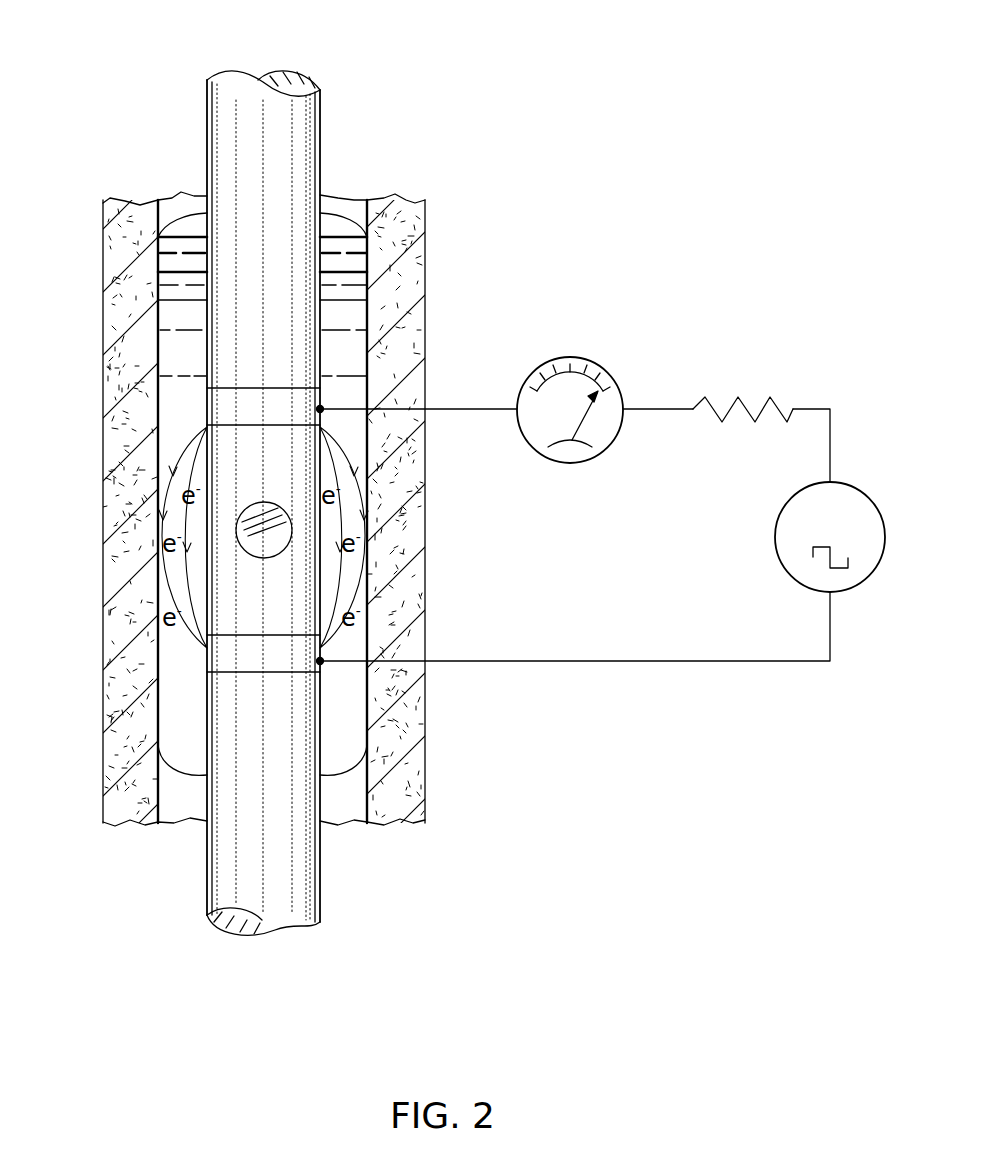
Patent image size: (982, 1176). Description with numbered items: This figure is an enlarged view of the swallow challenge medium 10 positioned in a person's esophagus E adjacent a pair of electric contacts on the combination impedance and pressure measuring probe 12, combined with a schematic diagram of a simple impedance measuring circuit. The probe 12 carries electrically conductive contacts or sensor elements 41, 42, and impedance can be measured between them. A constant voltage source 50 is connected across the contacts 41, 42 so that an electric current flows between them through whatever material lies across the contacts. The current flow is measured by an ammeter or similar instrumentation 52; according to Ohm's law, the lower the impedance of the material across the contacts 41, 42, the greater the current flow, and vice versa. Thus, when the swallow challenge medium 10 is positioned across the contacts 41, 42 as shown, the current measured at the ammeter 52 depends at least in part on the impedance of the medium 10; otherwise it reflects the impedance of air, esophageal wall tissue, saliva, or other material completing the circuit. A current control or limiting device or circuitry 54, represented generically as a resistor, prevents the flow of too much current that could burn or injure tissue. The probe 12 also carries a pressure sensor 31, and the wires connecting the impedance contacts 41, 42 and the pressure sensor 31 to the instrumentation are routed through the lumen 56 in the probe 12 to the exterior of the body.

The esophagus E is at (100, 273).
The swallow challenge medium 10 is at (338, 213).
The combination impedance and pressure measuring probe 12 is at (331, 320).
The lumen 56 is at (288, 90).
The contact or sensor element 41 is at (207, 400).
The contact or sensor element 42 is at (207, 658).
The pressure sensor 31 is at (245, 552).
The ammeter or similar instrumentation 52 is at (586, 358).
The current control or limiting device or circuitry 54 is at (746, 400).
The constant voltage source 50 is at (860, 495).